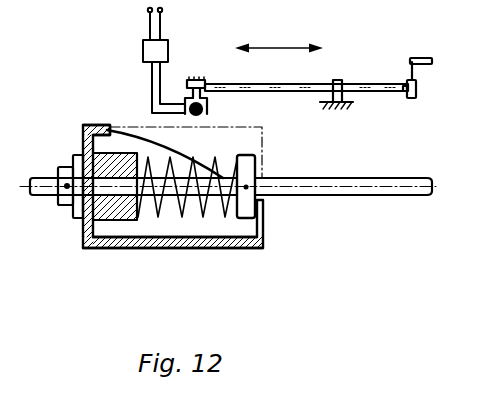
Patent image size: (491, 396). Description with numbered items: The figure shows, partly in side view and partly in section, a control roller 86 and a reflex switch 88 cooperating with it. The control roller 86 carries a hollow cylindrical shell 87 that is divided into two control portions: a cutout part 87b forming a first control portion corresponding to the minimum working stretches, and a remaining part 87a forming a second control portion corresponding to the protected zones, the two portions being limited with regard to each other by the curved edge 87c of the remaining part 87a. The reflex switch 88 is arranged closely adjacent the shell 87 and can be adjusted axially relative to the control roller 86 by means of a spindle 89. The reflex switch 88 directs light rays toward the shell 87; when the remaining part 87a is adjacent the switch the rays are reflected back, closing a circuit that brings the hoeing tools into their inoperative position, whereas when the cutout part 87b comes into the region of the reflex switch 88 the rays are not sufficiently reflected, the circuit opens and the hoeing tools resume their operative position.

The control roller 86 is at (83, 126).
The hollow cylindrical shell 87 is at (245, 249).
The remaining part 87a is at (110, 250).
The cutout part 87b is at (258, 147).
The curved edge 87c is at (164, 130).
The reflex switch 88 is at (209, 108).
The spindle 89 is at (270, 85).